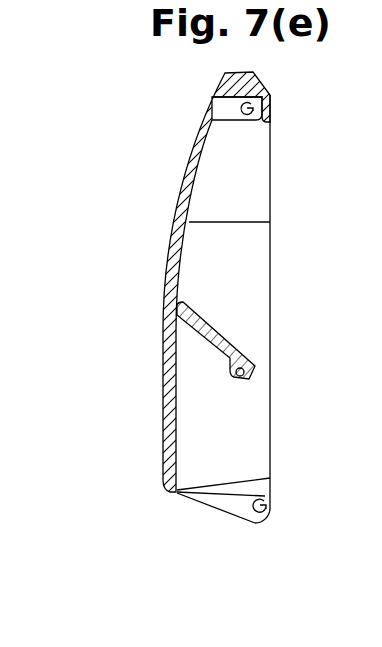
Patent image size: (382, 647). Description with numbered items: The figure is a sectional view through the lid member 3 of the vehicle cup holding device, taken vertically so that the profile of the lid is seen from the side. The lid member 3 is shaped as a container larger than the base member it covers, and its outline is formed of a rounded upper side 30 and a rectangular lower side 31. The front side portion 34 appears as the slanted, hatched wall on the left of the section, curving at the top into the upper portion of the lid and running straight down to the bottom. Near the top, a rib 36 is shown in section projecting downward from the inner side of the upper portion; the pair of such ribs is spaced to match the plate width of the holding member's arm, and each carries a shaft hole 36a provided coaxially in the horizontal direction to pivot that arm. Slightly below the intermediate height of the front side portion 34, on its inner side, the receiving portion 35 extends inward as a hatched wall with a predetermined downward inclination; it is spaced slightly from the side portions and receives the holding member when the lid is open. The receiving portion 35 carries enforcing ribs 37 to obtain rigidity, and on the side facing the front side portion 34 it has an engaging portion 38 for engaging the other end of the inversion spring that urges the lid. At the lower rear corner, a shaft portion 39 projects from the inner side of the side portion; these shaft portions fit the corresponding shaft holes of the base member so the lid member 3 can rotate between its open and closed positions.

The lid member 3 is at (62, 228).
The rounded upper side 30 is at (183, 193).
The rectangular lower side 31 is at (160, 355).
The front side portion 34 is at (191, 141).
The receiving portion 35 is at (213, 328).
The ribs 36 is at (229, 122).
The shaft holes 36a is at (253, 115).
The enforcing ribs 37 is at (202, 377).
The engaging portion 38 is at (240, 378).
The shaft portions 39 is at (255, 523).